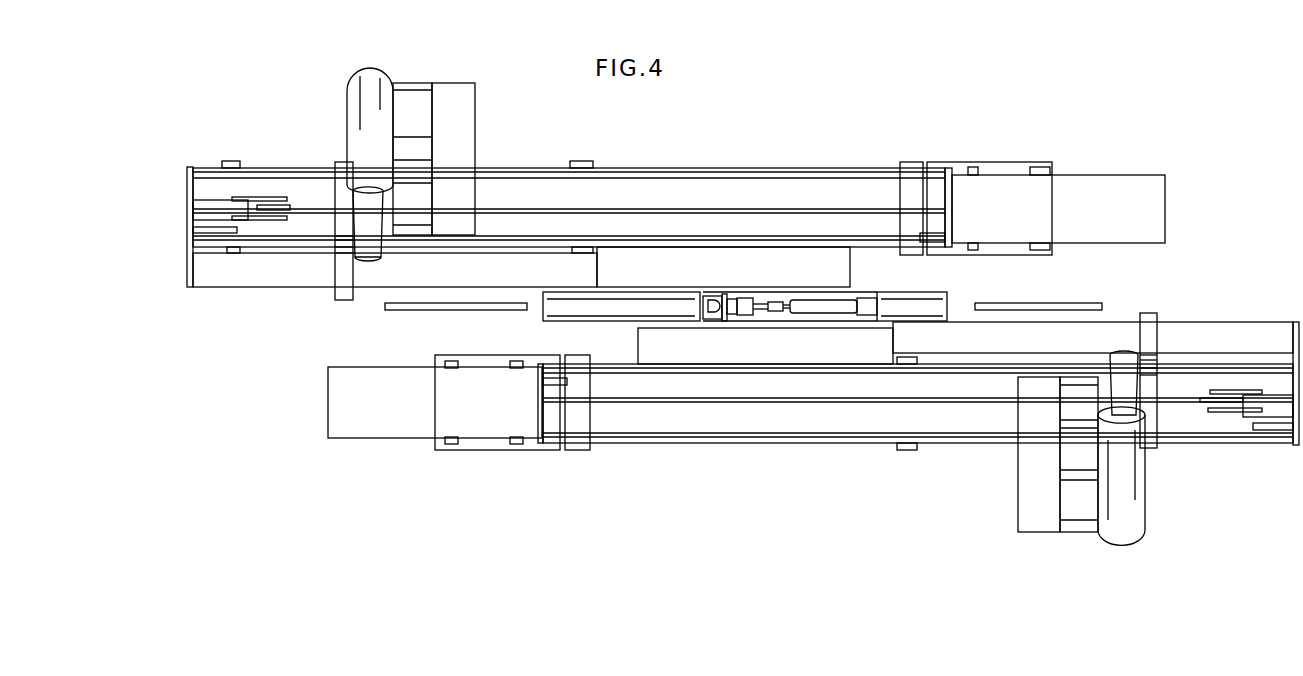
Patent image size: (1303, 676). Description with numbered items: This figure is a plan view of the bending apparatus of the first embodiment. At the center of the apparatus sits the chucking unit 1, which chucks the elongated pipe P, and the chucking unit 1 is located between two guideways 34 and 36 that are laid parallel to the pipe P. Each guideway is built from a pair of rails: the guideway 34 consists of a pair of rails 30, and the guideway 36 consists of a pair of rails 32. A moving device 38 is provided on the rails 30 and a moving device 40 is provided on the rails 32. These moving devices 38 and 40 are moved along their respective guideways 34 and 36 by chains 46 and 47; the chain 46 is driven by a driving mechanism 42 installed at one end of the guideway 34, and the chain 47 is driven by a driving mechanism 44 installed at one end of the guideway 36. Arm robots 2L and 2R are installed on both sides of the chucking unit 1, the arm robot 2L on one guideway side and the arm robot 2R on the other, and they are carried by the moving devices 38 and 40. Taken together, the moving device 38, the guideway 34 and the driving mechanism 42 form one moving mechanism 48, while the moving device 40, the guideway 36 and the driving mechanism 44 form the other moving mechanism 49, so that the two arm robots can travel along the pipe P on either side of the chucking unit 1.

The chucking unit 1 is at (713, 313).
The arm robot 2L is at (450, 120).
The arm robot 2R is at (1045, 490).
The rails 30 is at (830, 171).
The rails 32 is at (807, 443).
The guideway 34 is at (762, 193).
The guideway 36 is at (752, 414).
The moving device 38 is at (343, 186).
The moving device 40 is at (1150, 417).
The driving mechanism 42 is at (1105, 200).
The driving mechanism 44 is at (412, 415).
The chain 46 is at (687, 212).
The chain 47 is at (670, 400).
The moving mechanism 48 is at (305, 158).
The moving mechanism 49 is at (1160, 453).
The pipe P is at (1075, 303).